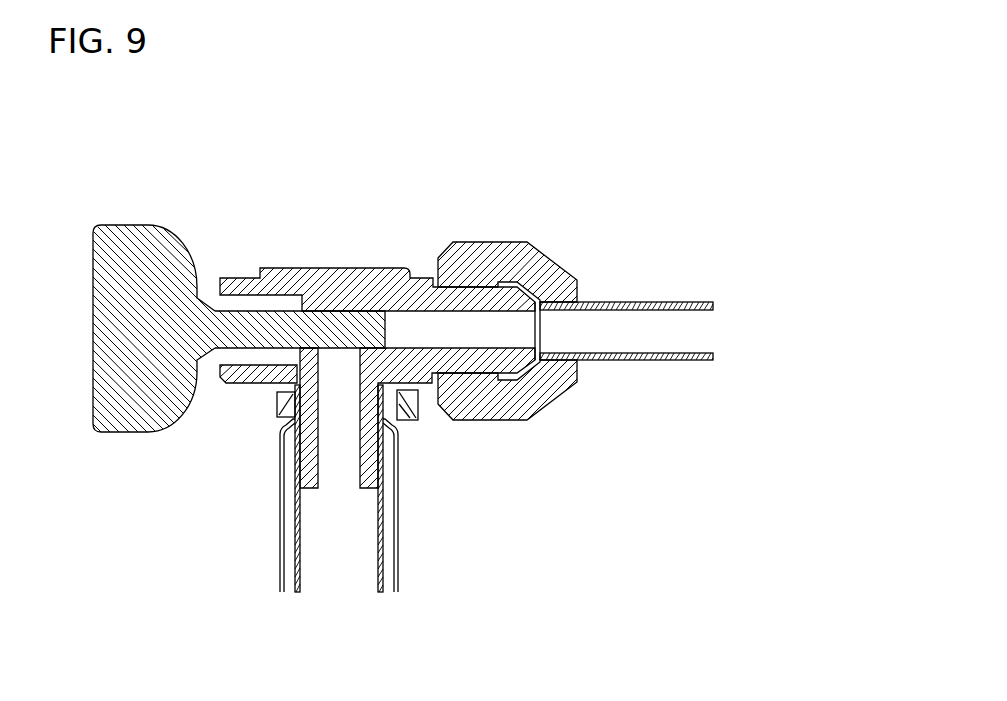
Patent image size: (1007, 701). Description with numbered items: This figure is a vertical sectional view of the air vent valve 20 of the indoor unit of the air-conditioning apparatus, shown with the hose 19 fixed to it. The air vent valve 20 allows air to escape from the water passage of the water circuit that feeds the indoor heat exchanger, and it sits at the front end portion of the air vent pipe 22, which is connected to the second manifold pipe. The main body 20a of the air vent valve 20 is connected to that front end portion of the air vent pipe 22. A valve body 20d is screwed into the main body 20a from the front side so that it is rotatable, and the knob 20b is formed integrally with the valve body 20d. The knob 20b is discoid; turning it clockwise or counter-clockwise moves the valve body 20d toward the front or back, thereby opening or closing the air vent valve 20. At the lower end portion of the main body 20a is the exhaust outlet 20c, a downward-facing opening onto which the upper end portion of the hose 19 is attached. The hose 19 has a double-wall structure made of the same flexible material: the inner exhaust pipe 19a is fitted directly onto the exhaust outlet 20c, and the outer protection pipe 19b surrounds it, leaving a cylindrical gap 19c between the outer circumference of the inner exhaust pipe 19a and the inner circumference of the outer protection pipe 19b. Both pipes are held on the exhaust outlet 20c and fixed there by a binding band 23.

The hose 19 is at (346, 488).
The inner exhaust pipe 19a is at (298, 491).
The outer protection pipe 19b is at (282, 538).
The cylindrical gap 19c is at (385, 519).
The air vent valve 20 is at (377, 330).
The main body 20a is at (315, 274).
The knob 20b is at (117, 318).
The exhaust outlet 20c is at (345, 451).
The valve body 20d is at (358, 327).
The air vent pipe 22 is at (631, 302).
The binding band 23 is at (412, 410).